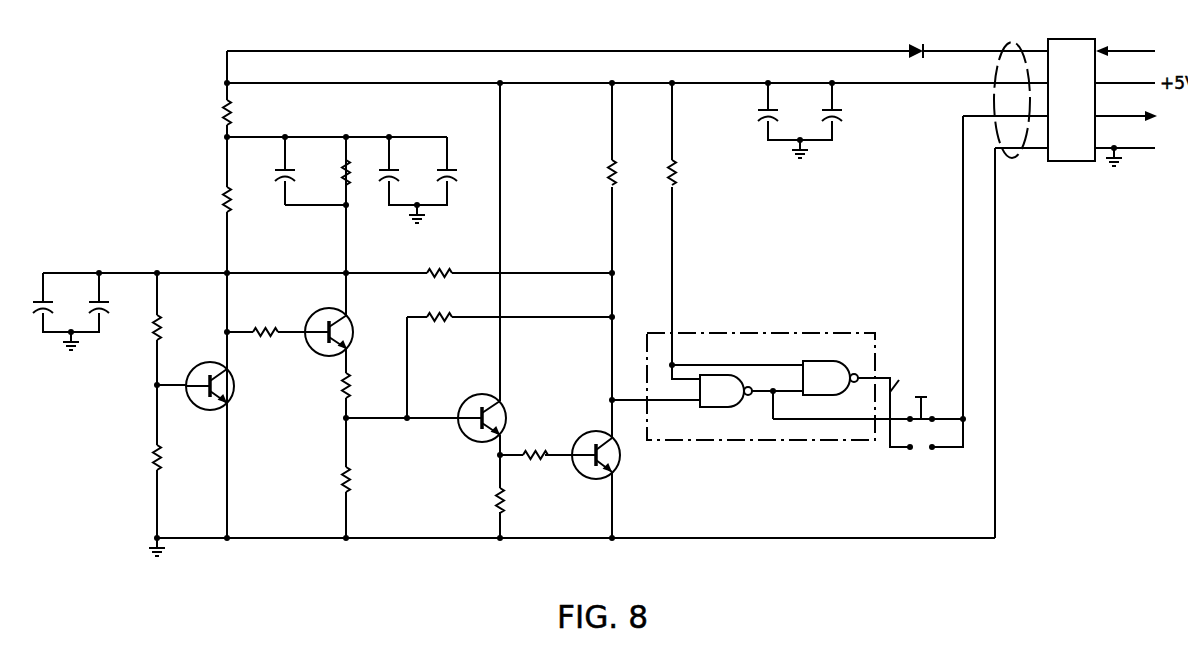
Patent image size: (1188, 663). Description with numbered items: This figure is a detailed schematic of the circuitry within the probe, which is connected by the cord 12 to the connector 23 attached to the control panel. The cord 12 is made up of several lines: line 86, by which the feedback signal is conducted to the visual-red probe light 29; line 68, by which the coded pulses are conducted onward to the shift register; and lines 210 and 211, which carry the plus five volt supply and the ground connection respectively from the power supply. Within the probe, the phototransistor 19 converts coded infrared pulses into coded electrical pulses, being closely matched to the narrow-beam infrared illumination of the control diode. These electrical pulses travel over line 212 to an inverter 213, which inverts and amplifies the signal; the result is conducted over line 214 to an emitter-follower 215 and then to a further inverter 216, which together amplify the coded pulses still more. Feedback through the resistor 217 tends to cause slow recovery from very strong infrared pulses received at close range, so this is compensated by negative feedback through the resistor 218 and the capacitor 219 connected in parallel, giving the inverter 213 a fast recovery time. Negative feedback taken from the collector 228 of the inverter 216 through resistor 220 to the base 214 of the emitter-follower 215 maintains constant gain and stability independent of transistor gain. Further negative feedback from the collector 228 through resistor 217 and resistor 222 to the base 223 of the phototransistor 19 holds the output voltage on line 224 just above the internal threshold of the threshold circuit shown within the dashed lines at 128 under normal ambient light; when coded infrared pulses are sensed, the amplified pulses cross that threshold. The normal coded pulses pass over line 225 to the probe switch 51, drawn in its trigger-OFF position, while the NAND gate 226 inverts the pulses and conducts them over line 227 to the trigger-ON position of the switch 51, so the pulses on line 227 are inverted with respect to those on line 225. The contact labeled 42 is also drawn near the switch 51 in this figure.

The visual-red probe light 29 is at (920, 46).
The cord 12 is at (1008, 47).
The connector 23 is at (1068, 38).
The line 86 is at (1114, 51).
The line 210 is at (1112, 83).
The line 68 is at (1114, 116).
The line 211 is at (1113, 148).
The capacitor 219 is at (268, 173).
The resistor 218 is at (337, 172).
The resistor 217 is at (440, 271).
The resistor 220 is at (443, 316).
The resistor 222 is at (162, 331).
The line 212 is at (247, 331).
The inverter 213 is at (307, 320).
The base 223 is at (190, 383).
The phototransistor 19 is at (197, 408).
The line 214 is at (450, 415).
The emitter-follower 215 is at (460, 431).
The inverter 216 is at (571, 440).
The collector 228 is at (604, 431).
The line 224 is at (678, 401).
The line 225 is at (778, 421).
The NAND gate 226 is at (823, 362).
The line 227 is at (899, 380).
The switch contact 42 is at (921, 397).
The probe switch 51 is at (934, 420).
The threshold circuit 128 is at (768, 440).